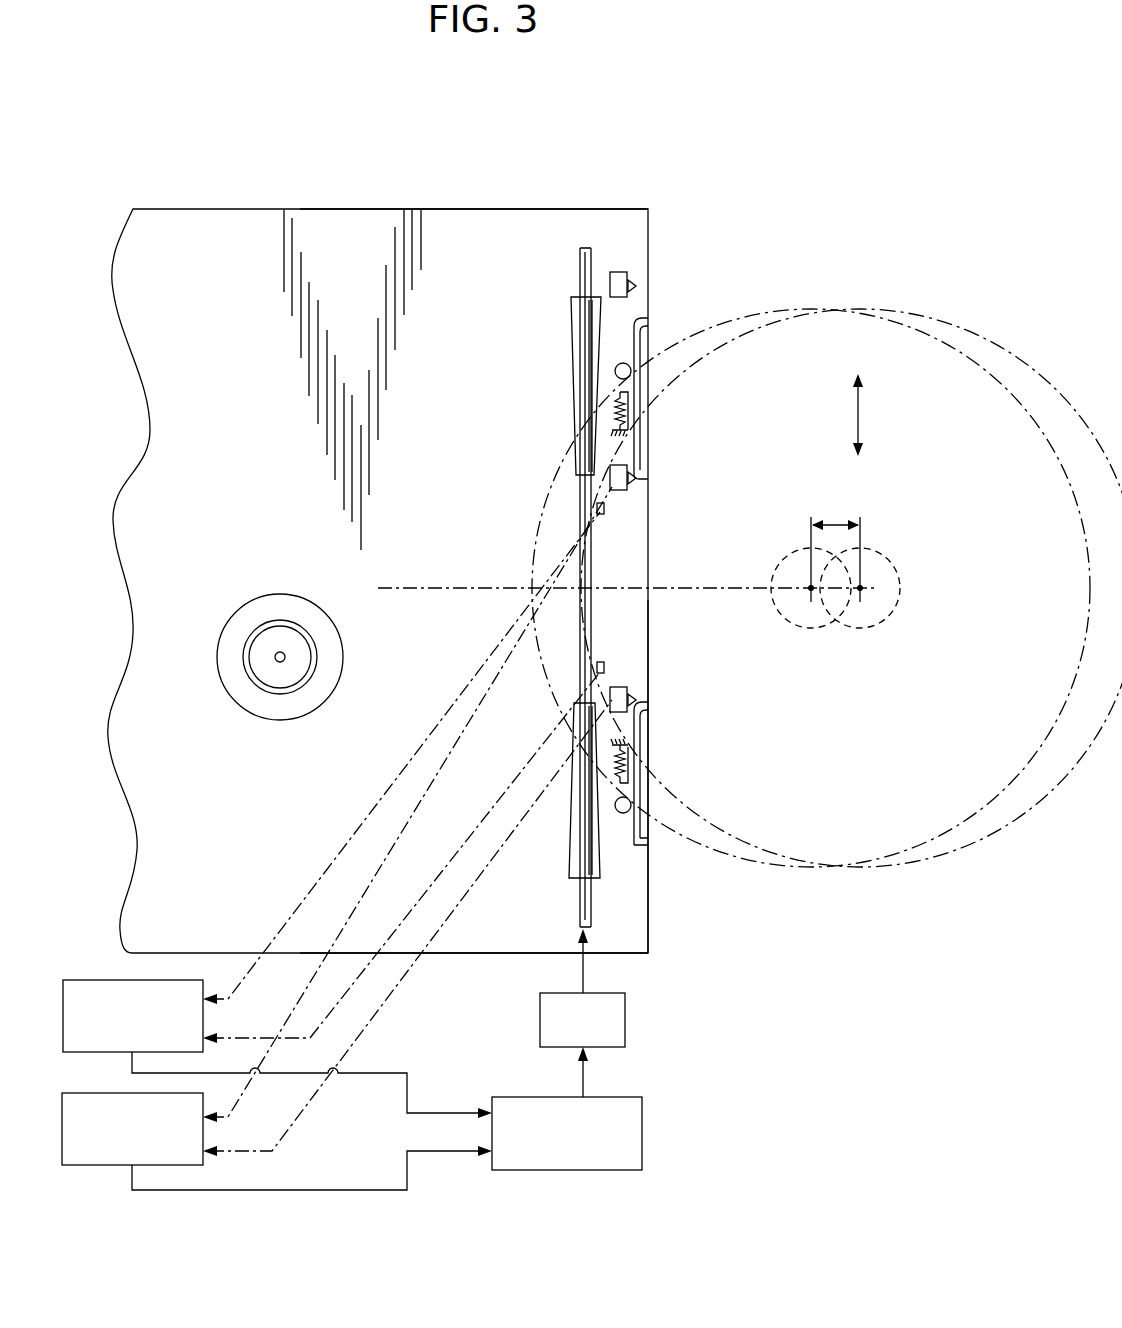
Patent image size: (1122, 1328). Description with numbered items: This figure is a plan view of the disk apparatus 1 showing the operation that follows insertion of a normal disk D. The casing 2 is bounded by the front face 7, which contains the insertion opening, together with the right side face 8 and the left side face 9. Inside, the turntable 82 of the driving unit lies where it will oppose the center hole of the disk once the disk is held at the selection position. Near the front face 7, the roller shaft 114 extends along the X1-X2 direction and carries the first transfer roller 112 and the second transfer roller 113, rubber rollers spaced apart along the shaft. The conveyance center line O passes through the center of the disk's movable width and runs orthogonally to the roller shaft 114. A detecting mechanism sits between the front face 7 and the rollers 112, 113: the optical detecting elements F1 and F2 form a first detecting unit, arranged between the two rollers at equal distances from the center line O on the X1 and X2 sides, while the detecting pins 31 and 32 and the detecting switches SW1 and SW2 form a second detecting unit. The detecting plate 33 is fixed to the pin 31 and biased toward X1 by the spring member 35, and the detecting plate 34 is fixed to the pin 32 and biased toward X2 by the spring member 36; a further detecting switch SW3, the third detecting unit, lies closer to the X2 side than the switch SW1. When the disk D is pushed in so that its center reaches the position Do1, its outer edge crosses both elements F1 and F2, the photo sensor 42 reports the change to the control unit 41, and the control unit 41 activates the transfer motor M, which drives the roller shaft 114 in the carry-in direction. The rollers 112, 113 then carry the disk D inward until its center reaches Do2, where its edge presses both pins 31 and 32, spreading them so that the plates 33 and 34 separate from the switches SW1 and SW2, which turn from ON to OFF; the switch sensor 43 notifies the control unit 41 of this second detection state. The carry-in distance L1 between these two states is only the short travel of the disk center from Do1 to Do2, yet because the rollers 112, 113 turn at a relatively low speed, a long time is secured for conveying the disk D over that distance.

The disc device 1 is at (488, 198).
The casing 2 is at (386, 205).
The front face 7 is at (650, 915).
The right side face 8 is at (320, 209).
The left side face 9 is at (478, 957).
The detecting pin 31 is at (627, 364).
The detecting pin 32 is at (631, 803).
The detecting plate 33 is at (640, 435).
The detecting plate 34 is at (640, 840).
The spring member 35 is at (620, 405).
The spring member 36 is at (620, 778).
The control unit 41 is at (645, 1133).
The photo sensor 42 is at (90, 980).
The switch sensor 43 is at (95, 1165).
The turntable 82 is at (270, 607).
The first transfer roller 112 is at (580, 876).
The second transfer roller 113 is at (580, 345).
The roller shaft 114 is at (585, 918).
The detecting switch SW1 is at (618, 490).
The detecting switch SW2 is at (625, 686).
The detecting switch SW3 is at (627, 268).
The optical detecting element F1 is at (604, 510).
The optical detecting element F2 is at (604, 668).
The normal disk D is at (777, 318).
The disk center position Do1 is at (864, 595).
The disk center position Do2 is at (808, 595).
The carry-in distance L1 is at (835, 512).
The X1 direction X1 is at (857, 468).
The X2 direction X2 is at (857, 401).
The conveyance center line O is at (615, 589).
The transfer motor M is at (582, 988).